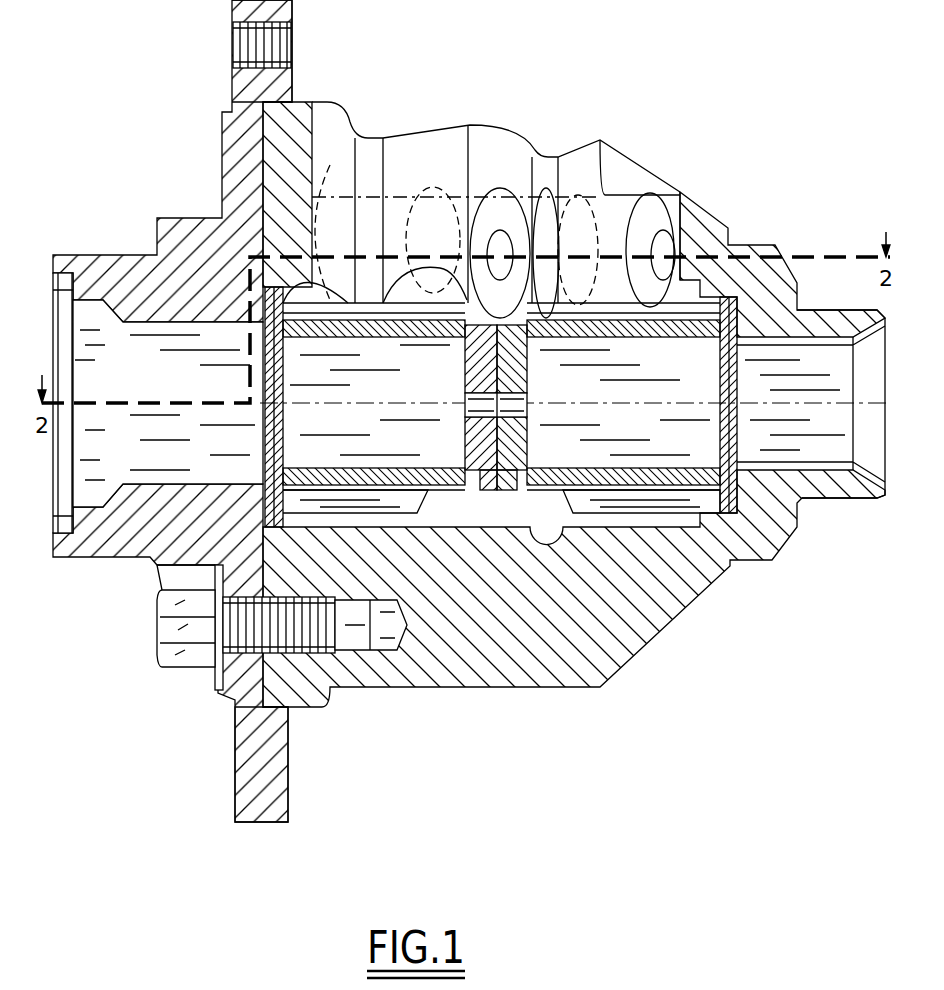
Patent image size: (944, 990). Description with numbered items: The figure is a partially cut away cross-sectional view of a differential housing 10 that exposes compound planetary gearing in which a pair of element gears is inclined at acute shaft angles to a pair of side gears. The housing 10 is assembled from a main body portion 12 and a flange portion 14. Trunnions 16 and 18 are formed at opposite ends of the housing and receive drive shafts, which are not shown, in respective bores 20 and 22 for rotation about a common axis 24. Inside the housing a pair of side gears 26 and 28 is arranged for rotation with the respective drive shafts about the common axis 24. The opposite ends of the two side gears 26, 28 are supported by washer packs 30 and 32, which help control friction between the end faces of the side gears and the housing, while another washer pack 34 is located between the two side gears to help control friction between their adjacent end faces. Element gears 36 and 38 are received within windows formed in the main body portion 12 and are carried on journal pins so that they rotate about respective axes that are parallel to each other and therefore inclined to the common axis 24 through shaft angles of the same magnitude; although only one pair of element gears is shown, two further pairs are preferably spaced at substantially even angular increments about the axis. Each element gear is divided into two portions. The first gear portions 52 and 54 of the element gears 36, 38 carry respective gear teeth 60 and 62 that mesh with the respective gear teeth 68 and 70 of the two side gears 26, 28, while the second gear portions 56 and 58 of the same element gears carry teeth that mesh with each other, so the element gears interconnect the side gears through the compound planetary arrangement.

The differential housing 10 is at (430, 118).
The main body portion 12 is at (672, 620).
The flange portion 14 is at (238, 757).
The trunnion 16 is at (103, 255).
The trunnion 18 is at (845, 312).
The bore 20 is at (180, 490).
The bore 22 is at (797, 467).
The common axis 24 is at (780, 405).
The side gear 26 is at (428, 462).
The side gear 28 is at (650, 462).
The washer pack 30 is at (263, 462).
The washer pack 32 is at (742, 470).
The washer pack 34 is at (462, 378).
The element gear 36 is at (343, 215).
The element gear 38 is at (630, 188).
The first gear portion 52 is at (395, 195).
The first gear portion 54 is at (598, 205).
The second gear portion 56 is at (457, 190).
The second gear portion 58 is at (520, 195).
The gear teeth 60 is at (335, 308).
The gear teeth 62 is at (627, 315).
The gear teeth 68 is at (438, 495).
The gear teeth 70 is at (565, 500).